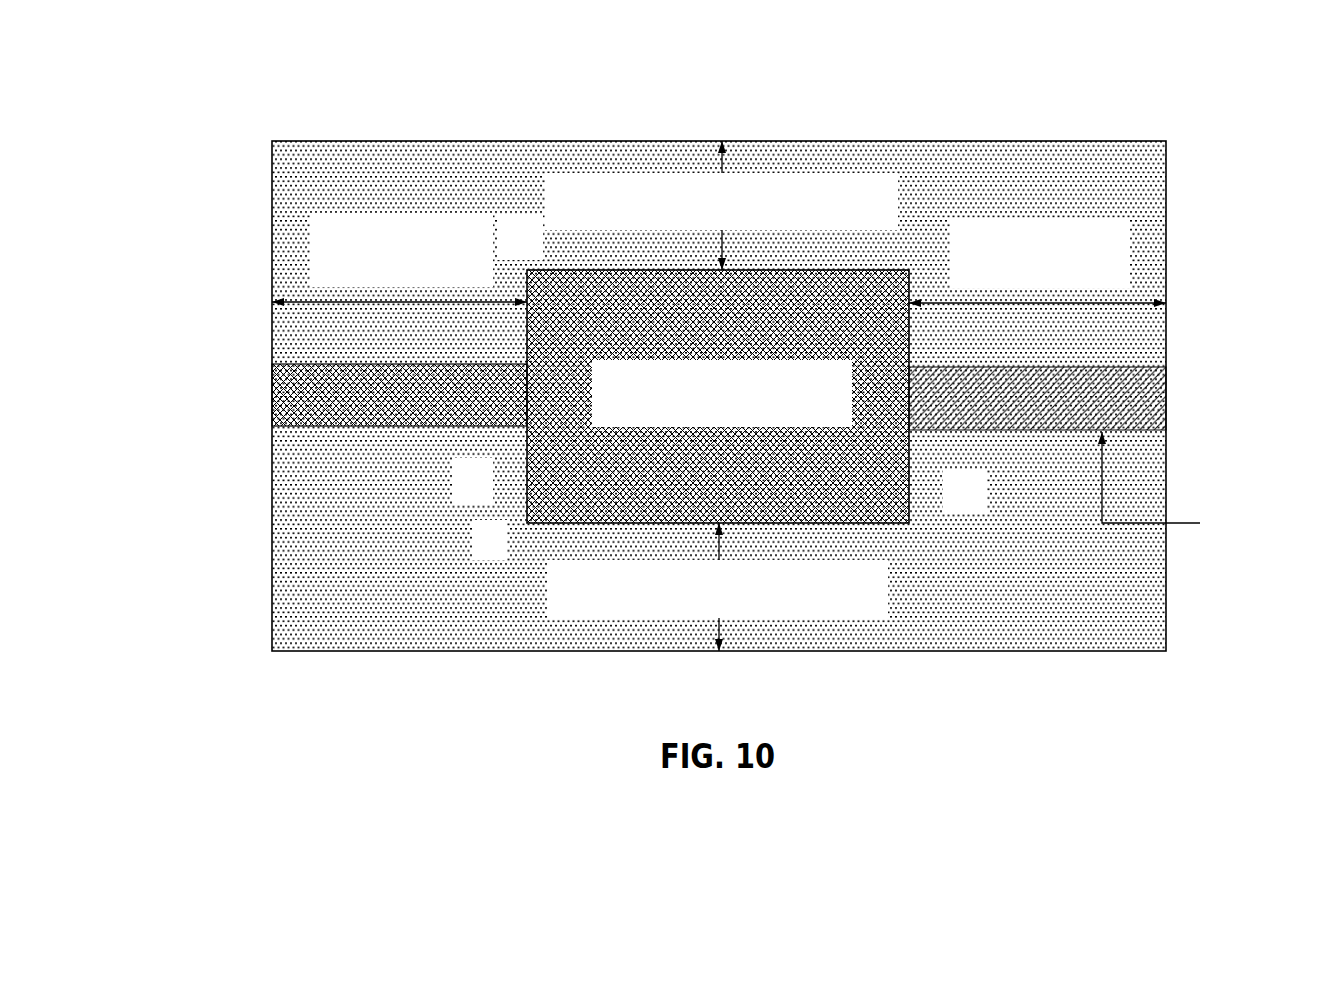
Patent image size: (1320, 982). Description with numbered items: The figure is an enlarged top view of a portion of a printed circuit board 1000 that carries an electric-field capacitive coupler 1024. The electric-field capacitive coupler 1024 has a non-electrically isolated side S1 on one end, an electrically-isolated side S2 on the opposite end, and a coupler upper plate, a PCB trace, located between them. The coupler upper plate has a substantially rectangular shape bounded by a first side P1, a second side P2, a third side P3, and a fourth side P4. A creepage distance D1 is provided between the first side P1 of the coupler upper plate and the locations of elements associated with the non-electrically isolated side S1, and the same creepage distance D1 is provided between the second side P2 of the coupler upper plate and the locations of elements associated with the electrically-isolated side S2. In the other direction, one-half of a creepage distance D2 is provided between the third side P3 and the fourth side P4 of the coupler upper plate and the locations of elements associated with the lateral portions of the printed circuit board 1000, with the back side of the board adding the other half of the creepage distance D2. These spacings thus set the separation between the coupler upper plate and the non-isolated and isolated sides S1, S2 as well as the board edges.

The printed circuit board 1000 is at (702, 362).
The electric-field capacitive coupler 1024 is at (702, 423).
The first side P1 is at (491, 480).
The second side P2 is at (946, 493).
The third side P3 is at (537, 240).
The fourth side P4 is at (517, 538).
The creepage distance D1 is at (719, 259).
The creepage distance D2 is at (722, 396).
The non-electrically isolated side S1 is at (310, 394).
The electrically-isolated side S2 is at (1108, 399).